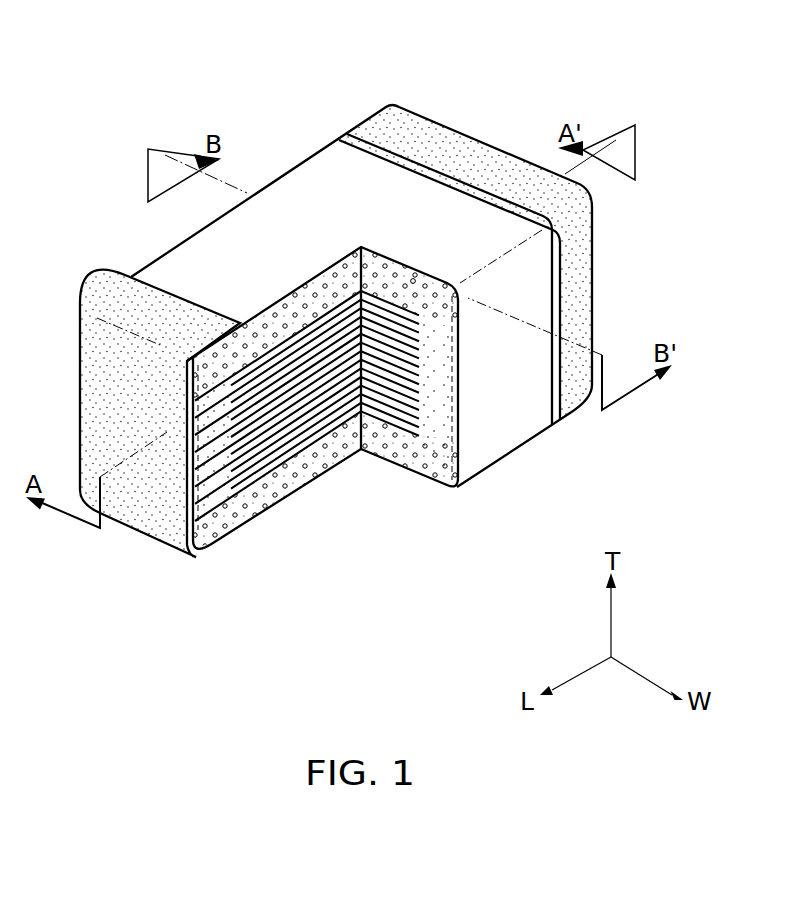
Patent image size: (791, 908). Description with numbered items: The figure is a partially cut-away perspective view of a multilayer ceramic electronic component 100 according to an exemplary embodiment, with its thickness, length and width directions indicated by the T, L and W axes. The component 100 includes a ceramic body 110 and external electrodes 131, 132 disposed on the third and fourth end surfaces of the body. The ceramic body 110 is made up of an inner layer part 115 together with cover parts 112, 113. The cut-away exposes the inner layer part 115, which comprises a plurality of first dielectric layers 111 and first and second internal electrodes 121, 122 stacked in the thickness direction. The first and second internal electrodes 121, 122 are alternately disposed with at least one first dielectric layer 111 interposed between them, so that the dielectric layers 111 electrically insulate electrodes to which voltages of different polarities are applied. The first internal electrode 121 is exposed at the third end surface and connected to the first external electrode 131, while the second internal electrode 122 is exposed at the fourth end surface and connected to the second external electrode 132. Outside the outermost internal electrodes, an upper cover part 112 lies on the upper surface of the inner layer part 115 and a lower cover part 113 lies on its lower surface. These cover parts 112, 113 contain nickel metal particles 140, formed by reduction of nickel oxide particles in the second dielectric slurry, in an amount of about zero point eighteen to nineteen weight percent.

The multilayer ceramic electronic component 100 is at (163, 44).
The ceramic body 110 is at (289, 166).
The first dielectric layer 111 is at (280, 412).
The upper cover part 112 is at (433, 285).
The lower cover part 113 is at (352, 456).
The inner layer part 115 is at (473, 405).
The first internal electrode 121 is at (275, 363).
The second internal electrode 122 is at (247, 478).
The first external electrode 131 is at (114, 298).
The second external electrode 132 is at (375, 122).
The nickel metal particles 140 is at (412, 279).